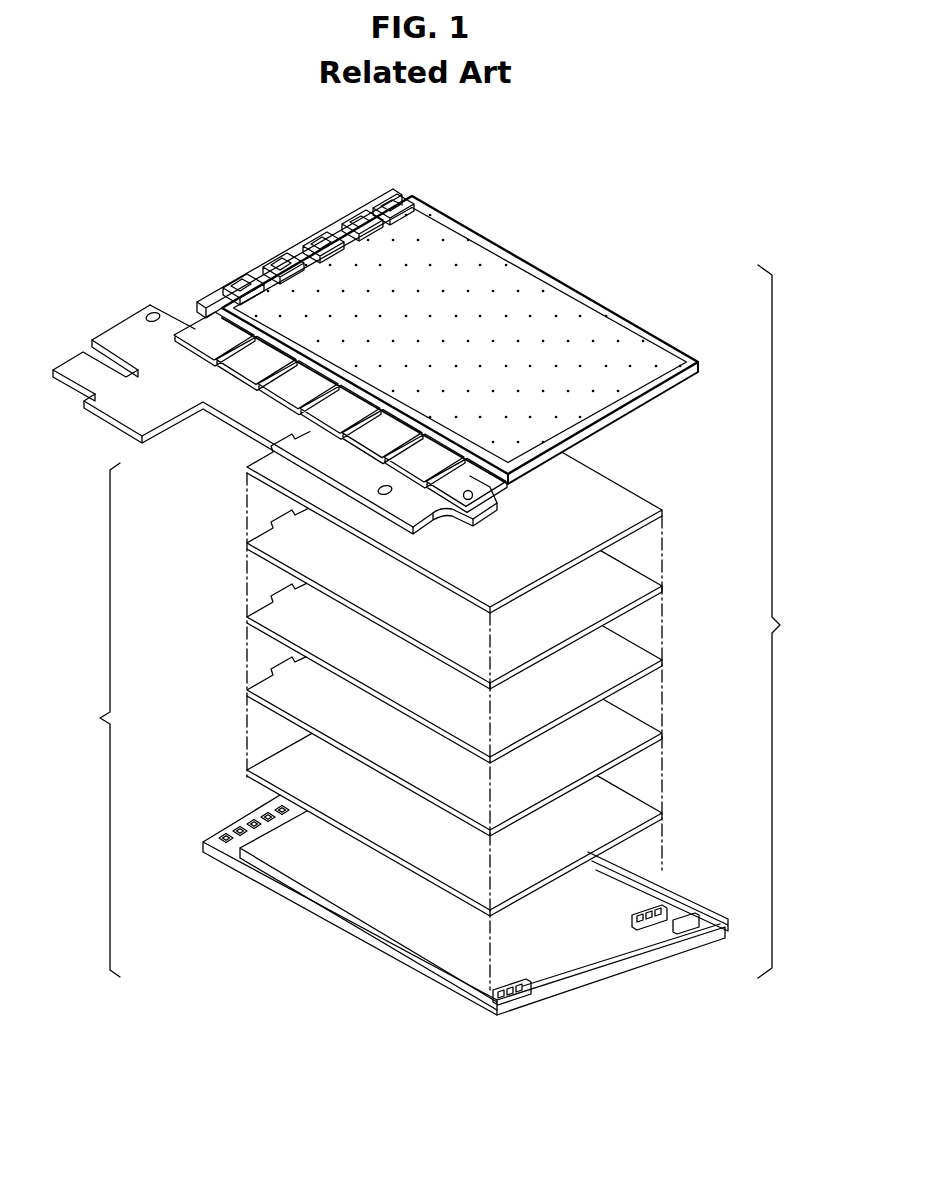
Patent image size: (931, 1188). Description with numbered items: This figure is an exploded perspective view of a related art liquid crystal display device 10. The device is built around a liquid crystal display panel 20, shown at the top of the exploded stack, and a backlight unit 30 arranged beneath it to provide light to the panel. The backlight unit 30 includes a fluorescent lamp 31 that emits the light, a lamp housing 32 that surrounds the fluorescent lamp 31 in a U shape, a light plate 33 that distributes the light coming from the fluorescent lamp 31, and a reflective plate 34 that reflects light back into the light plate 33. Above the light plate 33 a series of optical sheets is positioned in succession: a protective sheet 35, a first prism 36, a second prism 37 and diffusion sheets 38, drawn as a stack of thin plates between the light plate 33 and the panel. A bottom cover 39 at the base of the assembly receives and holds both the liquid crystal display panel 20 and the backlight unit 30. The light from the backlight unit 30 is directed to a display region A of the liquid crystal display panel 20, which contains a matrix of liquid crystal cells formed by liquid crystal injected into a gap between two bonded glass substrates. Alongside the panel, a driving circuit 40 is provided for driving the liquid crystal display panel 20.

The liquid crystal display device 10 is at (786, 621).
The liquid crystal display panel 20 is at (485, 340).
The display region A is at (612, 332).
The backlight unit 30 is at (95, 720).
The fluorescent lamp 31 is at (718, 940).
The lamp housing 32 is at (709, 917).
The light plate 33 is at (660, 803).
The reflective plate 34 is at (337, 900).
The protective sheet 35 is at (260, 715).
The first prism 36 is at (260, 637).
The second prism 37 is at (650, 568).
The diffusion sheets 38 is at (650, 492).
The bottom cover 39 is at (455, 988).
The driving circuit 40 is at (204, 303).